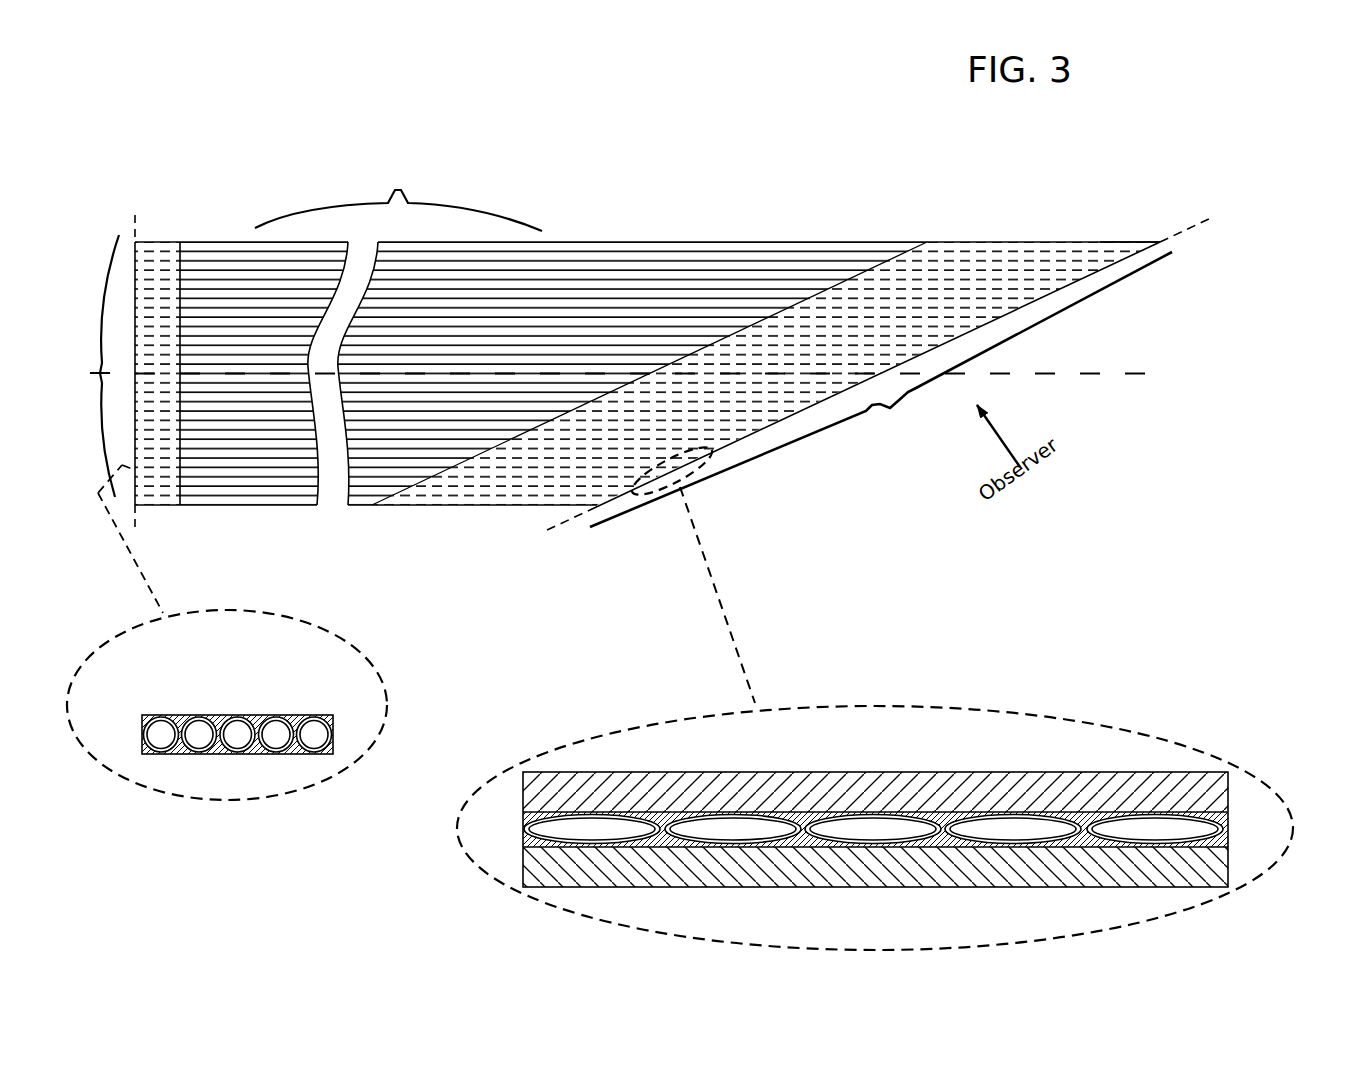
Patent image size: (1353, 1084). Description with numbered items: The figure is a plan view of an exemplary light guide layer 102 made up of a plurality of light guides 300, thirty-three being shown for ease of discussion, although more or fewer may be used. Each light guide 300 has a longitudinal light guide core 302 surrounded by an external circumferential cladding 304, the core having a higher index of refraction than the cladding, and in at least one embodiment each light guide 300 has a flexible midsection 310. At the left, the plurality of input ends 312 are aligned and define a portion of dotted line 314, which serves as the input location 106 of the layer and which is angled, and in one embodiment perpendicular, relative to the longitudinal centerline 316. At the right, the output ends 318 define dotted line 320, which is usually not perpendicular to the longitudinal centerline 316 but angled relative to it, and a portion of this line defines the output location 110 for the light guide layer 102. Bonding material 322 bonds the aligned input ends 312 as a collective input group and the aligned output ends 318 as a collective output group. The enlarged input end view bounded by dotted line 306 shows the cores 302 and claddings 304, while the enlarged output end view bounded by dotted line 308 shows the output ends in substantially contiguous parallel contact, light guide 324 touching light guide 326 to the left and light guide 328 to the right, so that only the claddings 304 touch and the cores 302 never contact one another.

The light guide layer 102 is at (750, 170).
The light guide 300 is at (578, 243).
The flexible midsection 310 is at (398, 196).
The input end 312 is at (139, 243).
The dotted line 314 is at (126, 362).
The longitudinal centerline 316 is at (666, 376).
The output end 318 is at (1147, 243).
The dotted line 320 is at (892, 363).
The bonding material 322 is at (150, 472).
The dotted line 306 is at (312, 623).
The dotted line 308 is at (862, 704).
The external circumferential cladding 304 is at (197, 717).
The longitudinal light guide core 302 is at (240, 728).
The light guide 324 is at (892, 839).
The light guide 326 is at (752, 839).
The light guide 328 is at (1032, 839).
The output location 110 is at (881, 389).
The input location 106 is at (97, 368).